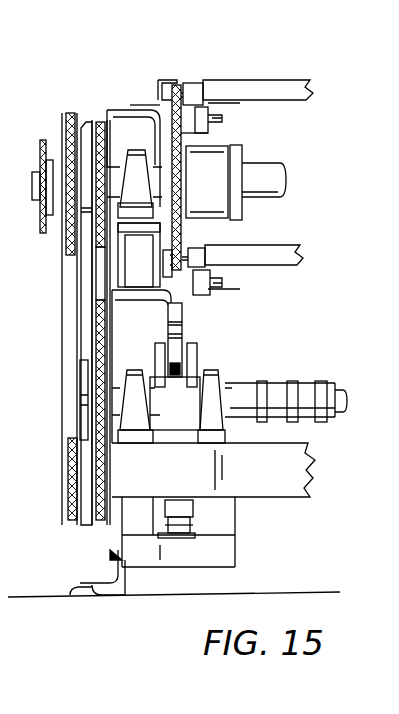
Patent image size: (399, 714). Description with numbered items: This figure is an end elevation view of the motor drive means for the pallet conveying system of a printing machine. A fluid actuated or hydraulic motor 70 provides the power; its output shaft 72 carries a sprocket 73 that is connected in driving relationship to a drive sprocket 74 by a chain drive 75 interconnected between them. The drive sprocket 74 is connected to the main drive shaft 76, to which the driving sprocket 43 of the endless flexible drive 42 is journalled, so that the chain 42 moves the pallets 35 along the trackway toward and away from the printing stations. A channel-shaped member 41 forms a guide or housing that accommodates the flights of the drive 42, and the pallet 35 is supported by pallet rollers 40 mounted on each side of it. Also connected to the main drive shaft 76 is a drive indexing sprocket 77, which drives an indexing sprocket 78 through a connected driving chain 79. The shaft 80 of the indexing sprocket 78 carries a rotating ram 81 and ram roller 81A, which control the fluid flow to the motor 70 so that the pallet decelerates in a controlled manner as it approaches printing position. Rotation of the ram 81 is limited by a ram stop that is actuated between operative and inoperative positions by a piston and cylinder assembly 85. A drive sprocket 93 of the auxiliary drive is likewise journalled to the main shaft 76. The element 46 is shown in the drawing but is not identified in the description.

The drive sprocket 93 is at (41, 153).
The drive sprocket 74 is at (65, 113).
The chain drive 75 is at (62, 283).
The sprocket 73 is at (68, 505).
The output shaft 72 is at (80, 515).
The drive indexing sprocket 77 is at (100, 125).
The driving chain 79 is at (95, 298).
The indexing sprocket 78 is at (100, 365).
The channel-shaped member 41 is at (162, 82).
The endless flexible drive 42 is at (177, 85).
The clamp block 46 is at (194, 83).
The pallet 35 is at (248, 80).
The pallet rollers 40 is at (215, 117).
The main drive shaft 76 is at (270, 170).
The driving sprocket 43 is at (177, 237).
The ram roller 81A is at (178, 348).
The rotating ram 81 is at (193, 350).
The shaft 80 is at (240, 390).
The hydraulic motor 70 is at (157, 513).
The piston and cylinder assembly 85 is at (180, 507).